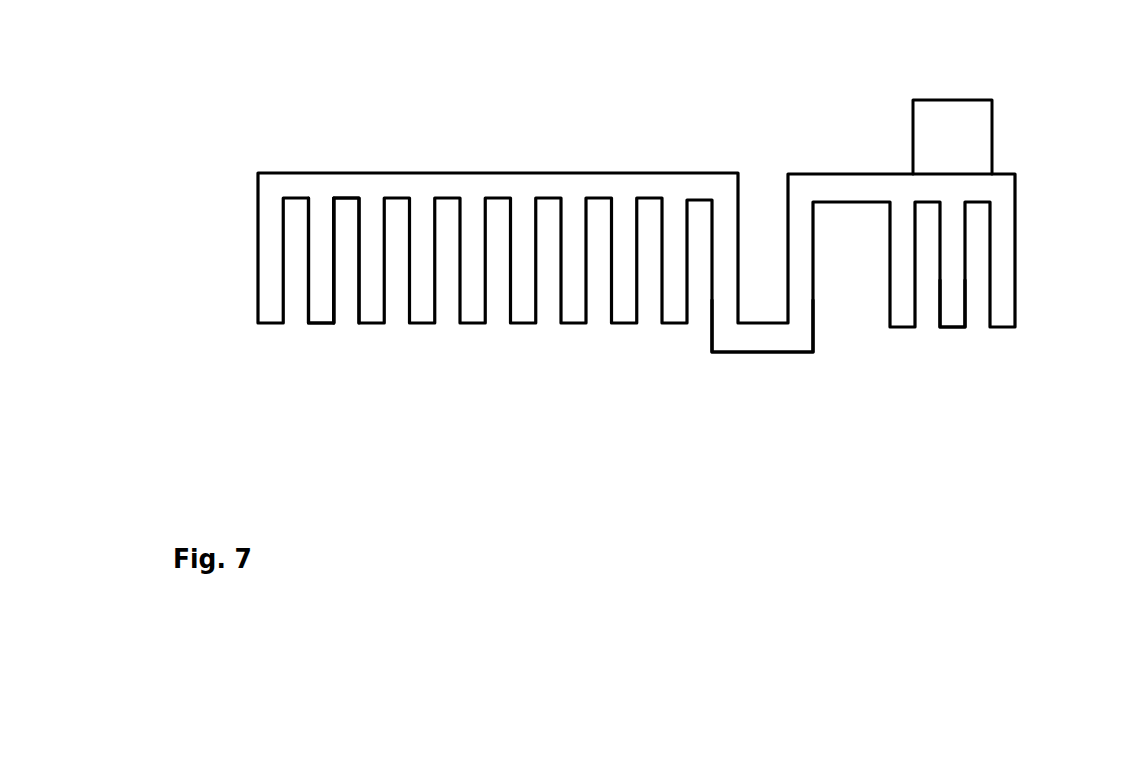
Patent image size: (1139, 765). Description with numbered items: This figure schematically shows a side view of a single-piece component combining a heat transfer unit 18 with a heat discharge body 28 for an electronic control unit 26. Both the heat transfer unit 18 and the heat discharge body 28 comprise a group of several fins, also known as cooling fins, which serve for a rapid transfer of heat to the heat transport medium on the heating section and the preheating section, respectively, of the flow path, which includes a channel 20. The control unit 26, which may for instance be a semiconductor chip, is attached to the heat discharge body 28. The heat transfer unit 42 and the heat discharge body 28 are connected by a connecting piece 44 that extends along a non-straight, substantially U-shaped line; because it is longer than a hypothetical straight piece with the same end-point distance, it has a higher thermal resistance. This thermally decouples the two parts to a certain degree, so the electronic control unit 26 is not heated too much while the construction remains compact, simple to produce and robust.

The heat transfer unit 18 is at (323, 310).
The channel 20 is at (348, 310).
The control unit 26 is at (972, 125).
The heat discharge body 28 is at (953, 318).
The heat transfer unit 42 is at (472, 186).
The connecting piece 44 is at (762, 340).